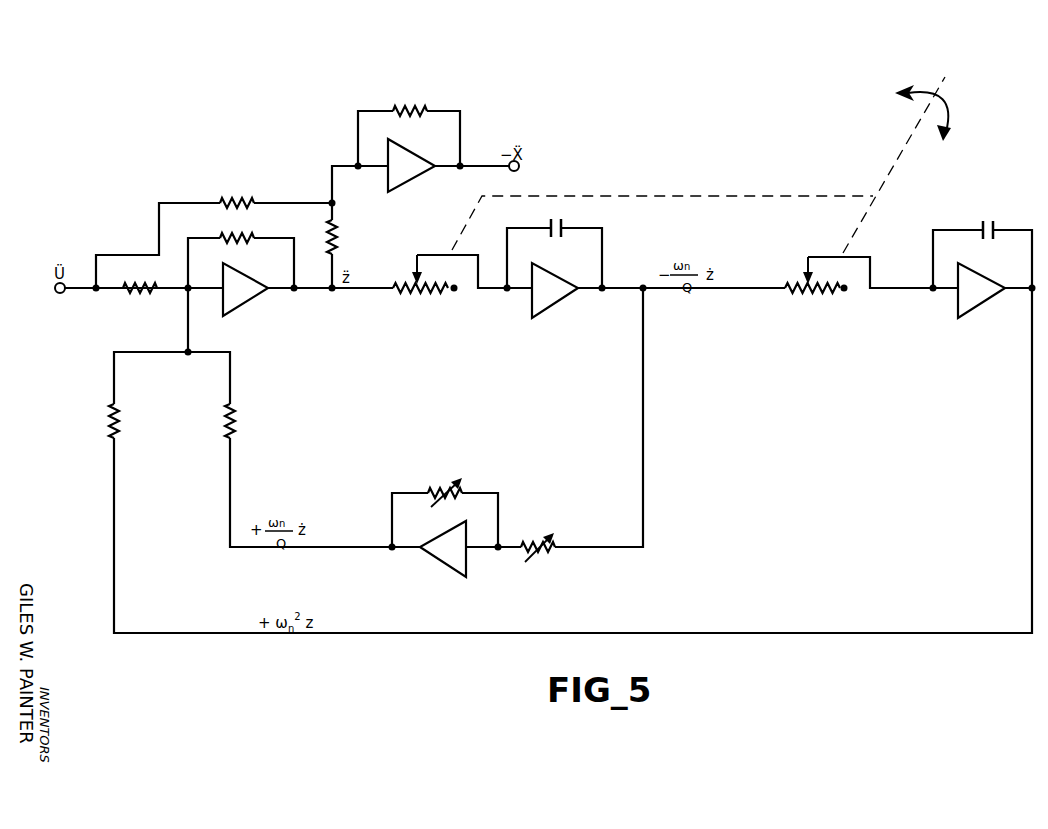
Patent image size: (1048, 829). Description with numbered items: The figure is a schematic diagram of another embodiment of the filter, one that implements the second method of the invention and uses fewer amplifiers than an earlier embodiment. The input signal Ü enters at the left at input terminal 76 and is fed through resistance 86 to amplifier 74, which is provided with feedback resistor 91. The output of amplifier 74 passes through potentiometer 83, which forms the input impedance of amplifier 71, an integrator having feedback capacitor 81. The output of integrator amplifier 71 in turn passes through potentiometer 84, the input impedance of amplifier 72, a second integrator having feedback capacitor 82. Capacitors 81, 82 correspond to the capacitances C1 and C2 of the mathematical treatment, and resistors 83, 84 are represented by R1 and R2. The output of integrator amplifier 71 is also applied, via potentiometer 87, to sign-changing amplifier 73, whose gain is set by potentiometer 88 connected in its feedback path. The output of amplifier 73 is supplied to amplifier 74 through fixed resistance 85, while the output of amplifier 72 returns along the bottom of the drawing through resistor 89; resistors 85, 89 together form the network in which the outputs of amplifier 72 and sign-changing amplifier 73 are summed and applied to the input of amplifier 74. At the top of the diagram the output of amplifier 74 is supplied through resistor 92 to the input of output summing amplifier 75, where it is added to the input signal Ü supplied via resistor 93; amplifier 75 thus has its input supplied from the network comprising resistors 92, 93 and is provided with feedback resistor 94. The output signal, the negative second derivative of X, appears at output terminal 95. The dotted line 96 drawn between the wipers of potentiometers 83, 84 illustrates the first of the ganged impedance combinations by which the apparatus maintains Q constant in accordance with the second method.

The integrator amplifier 71 is at (555, 290).
The integrator amplifier 72 is at (981, 290).
The sign-changing amplifier 73 is at (436, 549).
The amplifier 74 is at (245, 289).
The output summing amplifier 75 is at (411, 165).
The input terminal 76 is at (56, 297).
The feedback capacitor 81 is at (563, 227).
The feedback capacitor 82 is at (994, 221).
The potentiometer 83 is at (415, 300).
The potentiometer 84 is at (815, 300).
The fixed resistance 85 is at (233, 425).
The resistance 86 is at (135, 296).
The potentiometer 87 is at (540, 556).
The potentiometer 88 is at (432, 490).
The resistor 89 is at (110, 420).
The feedback resistor 91 is at (248, 234).
The resistor 92 is at (337, 243).
The resistor 93 is at (231, 200).
The feedback resistor 94 is at (403, 108).
The output terminal 95 is at (520, 164).
The dotted line 96 is at (700, 195).